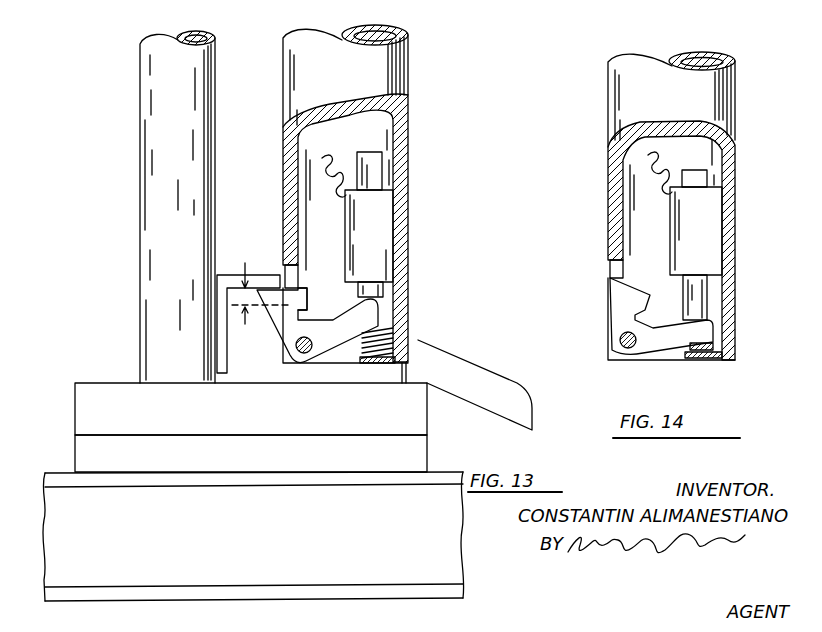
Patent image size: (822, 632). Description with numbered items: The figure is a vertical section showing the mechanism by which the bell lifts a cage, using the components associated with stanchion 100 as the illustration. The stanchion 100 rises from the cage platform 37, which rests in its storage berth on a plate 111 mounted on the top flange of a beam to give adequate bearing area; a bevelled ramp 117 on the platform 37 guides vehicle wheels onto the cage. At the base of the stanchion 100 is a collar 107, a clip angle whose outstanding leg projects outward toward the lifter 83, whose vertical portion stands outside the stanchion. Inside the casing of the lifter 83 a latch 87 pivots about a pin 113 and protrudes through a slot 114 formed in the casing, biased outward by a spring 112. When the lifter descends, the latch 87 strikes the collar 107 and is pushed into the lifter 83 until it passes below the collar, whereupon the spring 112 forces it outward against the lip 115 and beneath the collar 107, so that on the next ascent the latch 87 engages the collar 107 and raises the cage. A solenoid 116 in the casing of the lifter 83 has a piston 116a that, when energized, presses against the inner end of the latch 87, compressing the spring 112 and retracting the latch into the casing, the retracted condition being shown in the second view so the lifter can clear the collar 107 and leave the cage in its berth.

In FIG. 13, the stanchion 100 is at (150, 125).
In FIG. 13, the lifter 83 is at (383, 85).
In FIG. 14, the lifter 83 is at (628, 103).
In FIG. 13, the solenoid 116 is at (385, 252).
In FIG. 14, the solenoid 116 is at (707, 227).
In FIG. 13, the piston 116a is at (370, 173).
In FIG. 14, the piston 116a is at (697, 293).
In FIG. 13, the collar 107 is at (225, 283).
In FIG. 13, the slot 114 is at (293, 278).
In FIG. 14, the slot 114 is at (610, 265).
In FIG. 13, the lip 115 is at (303, 300).
In FIG. 13, the latch 87 is at (282, 313).
In FIG. 14, the latch 87 is at (620, 298).
In FIG. 13, the pin 113 is at (303, 356).
In FIG. 14, the pin 113 is at (627, 348).
In FIG. 13, the spring 112 is at (387, 337).
In FIG. 14, the spring 112 is at (710, 342).
In FIG. 13, the bevelled ramp 117 is at (467, 372).
In FIG. 13, the platform 37 is at (95, 412).
In FIG. 13, the plate 111 is at (410, 447).